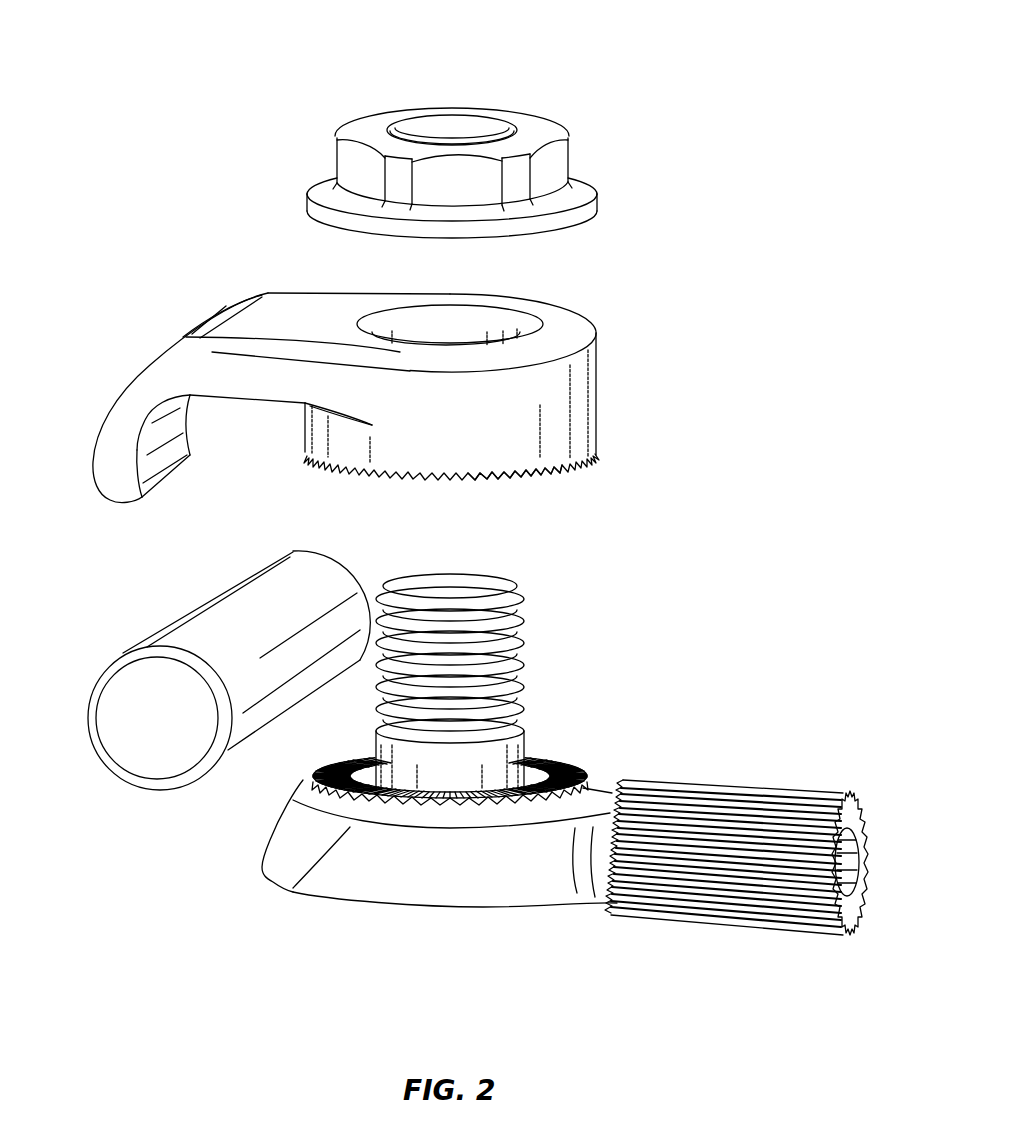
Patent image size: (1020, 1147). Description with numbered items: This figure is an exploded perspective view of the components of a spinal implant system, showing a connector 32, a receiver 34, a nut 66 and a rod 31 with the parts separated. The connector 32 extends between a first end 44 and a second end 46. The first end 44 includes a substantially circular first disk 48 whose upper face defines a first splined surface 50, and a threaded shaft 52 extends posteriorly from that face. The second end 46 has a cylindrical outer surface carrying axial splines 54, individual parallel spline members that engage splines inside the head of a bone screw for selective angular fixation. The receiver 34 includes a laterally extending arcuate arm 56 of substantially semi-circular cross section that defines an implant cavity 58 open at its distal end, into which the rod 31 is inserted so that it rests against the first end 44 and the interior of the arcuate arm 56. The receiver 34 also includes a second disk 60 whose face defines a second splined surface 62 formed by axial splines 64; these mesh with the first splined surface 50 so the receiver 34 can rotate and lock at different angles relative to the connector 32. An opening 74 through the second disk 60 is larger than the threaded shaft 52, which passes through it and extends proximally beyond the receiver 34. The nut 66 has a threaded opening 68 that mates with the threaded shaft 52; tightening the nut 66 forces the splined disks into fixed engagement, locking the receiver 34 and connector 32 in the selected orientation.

The rod 31 is at (198, 635).
The connector 32 is at (518, 781).
The receiver 34 is at (402, 409).
The first end 44 is at (293, 845).
The second end 46 is at (751, 864).
The first disk 48 is at (407, 877).
The first splined surface 50 is at (565, 757).
The threaded shaft 52 is at (520, 645).
The axial splines 54 is at (760, 920).
The arcuate arm 56 is at (142, 362).
The implant cavity 58 is at (217, 468).
The second disk 60 is at (572, 427).
The second splined surface 62 is at (383, 478).
The axial splines 64 is at (483, 473).
The nut 66 is at (430, 119).
The opening 68 is at (440, 133).
The opening 74 is at (473, 332).